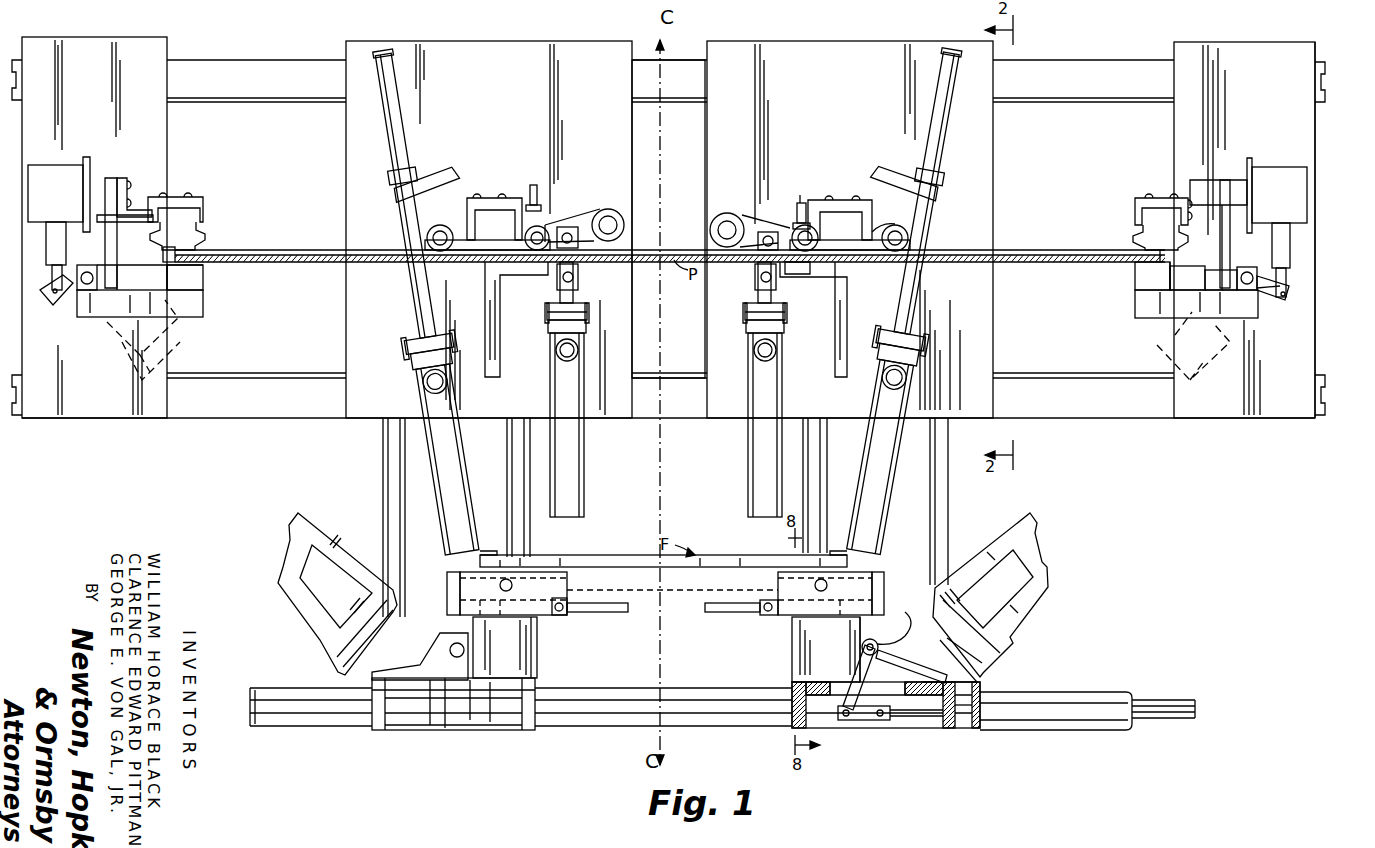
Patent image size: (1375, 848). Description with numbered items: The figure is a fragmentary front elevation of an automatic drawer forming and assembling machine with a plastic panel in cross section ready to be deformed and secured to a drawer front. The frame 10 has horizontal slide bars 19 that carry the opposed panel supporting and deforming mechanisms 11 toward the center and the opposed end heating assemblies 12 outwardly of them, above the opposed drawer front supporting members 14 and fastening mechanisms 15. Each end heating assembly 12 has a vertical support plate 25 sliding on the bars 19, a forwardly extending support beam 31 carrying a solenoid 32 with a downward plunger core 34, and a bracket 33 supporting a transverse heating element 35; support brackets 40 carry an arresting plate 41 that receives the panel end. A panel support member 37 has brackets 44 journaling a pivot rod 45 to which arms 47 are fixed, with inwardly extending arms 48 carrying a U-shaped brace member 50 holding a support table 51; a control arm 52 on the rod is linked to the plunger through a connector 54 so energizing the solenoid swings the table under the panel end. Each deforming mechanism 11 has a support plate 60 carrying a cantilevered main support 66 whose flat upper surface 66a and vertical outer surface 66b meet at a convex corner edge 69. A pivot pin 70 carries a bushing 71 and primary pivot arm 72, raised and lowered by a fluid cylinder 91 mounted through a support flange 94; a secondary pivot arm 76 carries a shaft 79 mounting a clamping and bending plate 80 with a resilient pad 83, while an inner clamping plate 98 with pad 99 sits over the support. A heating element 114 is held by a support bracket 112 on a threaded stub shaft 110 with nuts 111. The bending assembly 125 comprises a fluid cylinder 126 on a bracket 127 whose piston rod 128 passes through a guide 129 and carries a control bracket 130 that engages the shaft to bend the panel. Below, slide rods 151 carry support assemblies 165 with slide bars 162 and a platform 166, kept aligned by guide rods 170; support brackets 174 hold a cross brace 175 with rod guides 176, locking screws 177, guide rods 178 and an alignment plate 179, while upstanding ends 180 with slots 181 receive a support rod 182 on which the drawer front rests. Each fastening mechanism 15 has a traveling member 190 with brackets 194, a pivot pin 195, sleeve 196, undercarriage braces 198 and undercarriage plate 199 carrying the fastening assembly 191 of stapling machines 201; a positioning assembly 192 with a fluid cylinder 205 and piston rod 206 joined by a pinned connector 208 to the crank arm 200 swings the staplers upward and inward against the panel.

The frame 10 is at (262, 424).
The panel supporting and deforming mechanism 11 is at (346, 174).
The panel positioning and end heating assembly 12 is at (165, 160).
The slide bars 19 is at (1102, 100).
The support plate 25 is at (1312, 136).
The support beam 31 is at (1222, 180).
The solenoid 32 is at (1293, 172).
The bracket 33 is at (1183, 215).
The plunger core 34 is at (1290, 240).
The heating element 35 is at (204, 243).
The panel support member 37 is at (85, 344).
The support brackets 40 is at (1206, 268).
The arresting plate 41 is at (1169, 252).
The brackets 44 is at (1228, 268).
The pivot rod 45 is at (1248, 272).
The arms 47 is at (1228, 292).
The arms 48 is at (1185, 316).
The U-shaped brace member 50 is at (1145, 292).
The support table 51 is at (1135, 274).
The control arm 52 is at (1286, 290).
The connector 54 is at (1272, 286).
The support plate 60 is at (994, 330).
The main support 66 is at (835, 347).
The upper surface 66a is at (882, 298).
The vertical outer surface 66b is at (882, 318).
The corner edge 69 is at (487, 262).
The pivot pin 70 is at (725, 230).
The bushing 71 is at (733, 216).
The primary pivot arm 72 is at (750, 216).
The secondary pivot arm 76 is at (874, 236).
The shaft 79 is at (897, 238).
The clamping and bending plate 80 is at (896, 281).
The resilient pad 83 is at (871, 281).
The fluid cylinder 91 is at (775, 400).
The support flange 94 is at (784, 330).
The clamping plate 98 is at (796, 281).
The resilient pad 99 is at (821, 295).
The stub shaft 110 is at (798, 201).
The nuts 111 is at (792, 210).
The support bracket 112 is at (815, 200).
The heating element 114 is at (467, 222).
The bending assembly 125 is at (948, 178).
The fluid cylinder 126 is at (905, 400).
The bracket 127 is at (925, 358).
The piston rod 128 is at (940, 221).
The guide 129 is at (924, 173).
The control bracket 130 is at (945, 193).
The slide rods 151 is at (725, 715).
The slide bars 162 is at (952, 728).
The support assembly 165 is at (795, 718).
The platform 166 is at (795, 686).
The guide rods 170 is at (818, 462).
The support brackets 174 is at (798, 655).
The cross brace 175 is at (770, 618).
The rod guides 176 is at (768, 603).
The locking screws 177 is at (760, 605).
The guide rods 178 is at (708, 613).
The alignment plate 179 is at (874, 590).
The upstanding ends 180 is at (790, 585).
The slots 181 is at (822, 580).
The support rod 182 is at (828, 588).
The traveling member 190 is at (899, 617).
The fastening assembly 191 is at (1045, 603).
The positioning assembly 192 is at (918, 718).
The brackets 194 is at (872, 670).
The pivot pin 195 is at (880, 648).
The sleeve 196 is at (874, 641).
The undercarriage braces 198 is at (950, 656).
The undercarriage plate 199 is at (962, 620).
The crank arm 200 is at (875, 663).
The stapling machines 201 is at (1048, 580).
The fluid cylinder 205 is at (1012, 728).
The piston rod 206 is at (905, 715).
The pinned connector 208 is at (857, 722).
The drawer front supporting member 14 is at (537, 658).
The fastening mechanism 15 is at (440, 632).